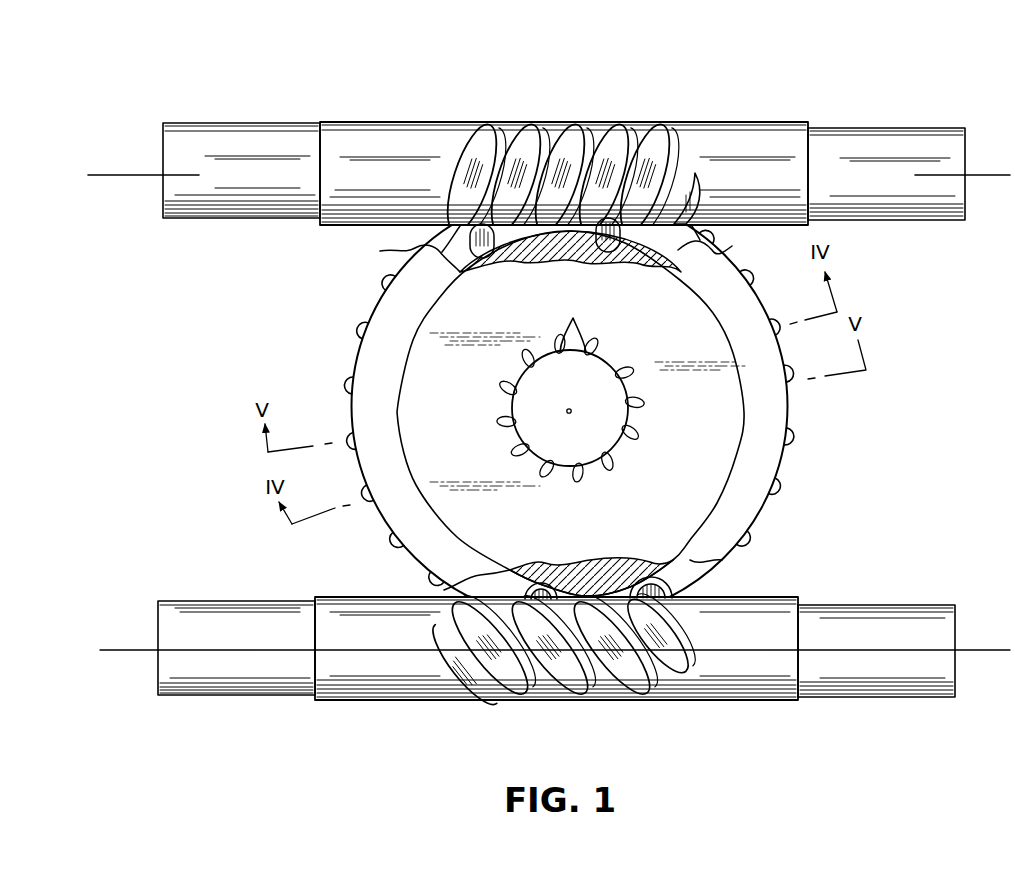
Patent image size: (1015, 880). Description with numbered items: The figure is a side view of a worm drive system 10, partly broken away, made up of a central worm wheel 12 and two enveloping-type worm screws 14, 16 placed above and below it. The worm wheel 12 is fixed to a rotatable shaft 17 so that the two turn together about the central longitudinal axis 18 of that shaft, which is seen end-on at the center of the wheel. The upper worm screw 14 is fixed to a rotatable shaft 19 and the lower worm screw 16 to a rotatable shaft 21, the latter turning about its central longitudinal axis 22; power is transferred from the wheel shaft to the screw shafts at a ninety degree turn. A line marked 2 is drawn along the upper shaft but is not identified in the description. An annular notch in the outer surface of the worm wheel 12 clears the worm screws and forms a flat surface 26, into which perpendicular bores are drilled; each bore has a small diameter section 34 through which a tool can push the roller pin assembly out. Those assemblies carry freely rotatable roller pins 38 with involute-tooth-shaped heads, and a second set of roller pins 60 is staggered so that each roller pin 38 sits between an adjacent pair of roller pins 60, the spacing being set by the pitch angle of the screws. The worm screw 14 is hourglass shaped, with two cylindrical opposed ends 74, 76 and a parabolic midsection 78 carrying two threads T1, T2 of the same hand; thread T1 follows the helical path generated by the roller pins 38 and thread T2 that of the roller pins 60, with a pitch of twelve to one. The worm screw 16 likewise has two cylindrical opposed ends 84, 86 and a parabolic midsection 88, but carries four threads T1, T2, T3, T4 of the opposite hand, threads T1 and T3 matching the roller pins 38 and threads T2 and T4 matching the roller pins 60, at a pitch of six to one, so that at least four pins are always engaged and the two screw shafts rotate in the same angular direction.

The worm drive system 10 is at (717, 44).
The worm wheel 12 is at (771, 518).
The worm screw 14 is at (694, 116).
The worm screw 16 is at (690, 704).
The shaft 17 is at (622, 417).
The central longitudinal axis 18 is at (569, 409).
The shaft 19 is at (866, 147).
The upper shaft axis 2 is at (1000, 175).
The shaft 21 is at (863, 618).
The central longitudinal axis 22 is at (975, 650).
The flat surface 26 is at (431, 257).
The small diameter section 34 is at (572, 318).
The roller pin 38 is at (383, 285).
The roller pin 60 is at (358, 332).
The cylindrical end 74 is at (768, 140).
The cylindrical end 76 is at (360, 140).
The parabolic midsection 78 is at (575, 135).
The cylindrical end 84 is at (777, 606).
The cylindrical end 86 is at (366, 616).
The parabolic midsection 88 is at (602, 593).
The hourglass screw thread T1 is at (532, 138).
The hourglass screw thread T2 is at (466, 135).
The hourglass screw thread T3 is at (527, 672).
The hourglass screw thread T4 is at (472, 702).